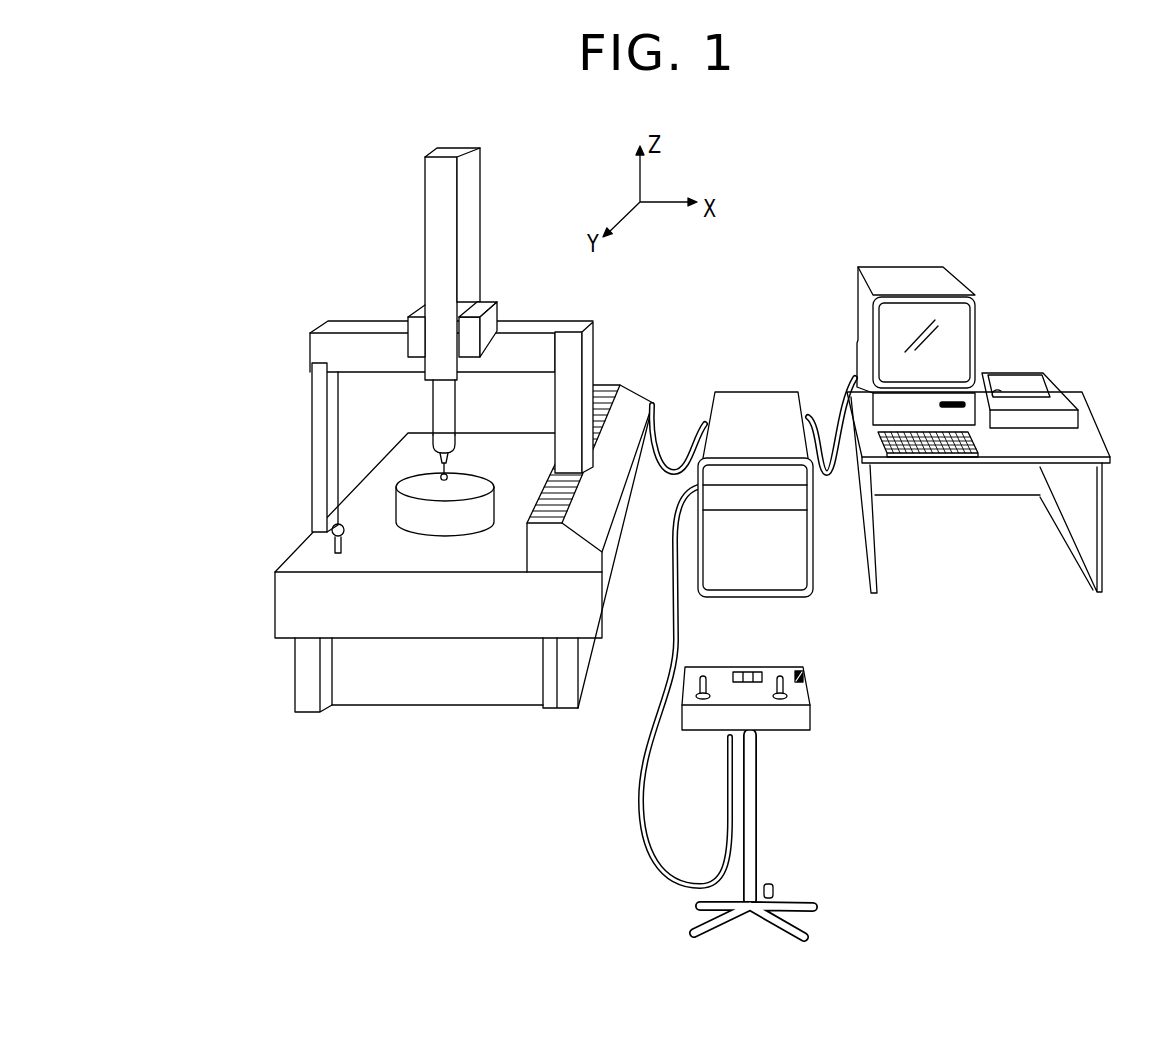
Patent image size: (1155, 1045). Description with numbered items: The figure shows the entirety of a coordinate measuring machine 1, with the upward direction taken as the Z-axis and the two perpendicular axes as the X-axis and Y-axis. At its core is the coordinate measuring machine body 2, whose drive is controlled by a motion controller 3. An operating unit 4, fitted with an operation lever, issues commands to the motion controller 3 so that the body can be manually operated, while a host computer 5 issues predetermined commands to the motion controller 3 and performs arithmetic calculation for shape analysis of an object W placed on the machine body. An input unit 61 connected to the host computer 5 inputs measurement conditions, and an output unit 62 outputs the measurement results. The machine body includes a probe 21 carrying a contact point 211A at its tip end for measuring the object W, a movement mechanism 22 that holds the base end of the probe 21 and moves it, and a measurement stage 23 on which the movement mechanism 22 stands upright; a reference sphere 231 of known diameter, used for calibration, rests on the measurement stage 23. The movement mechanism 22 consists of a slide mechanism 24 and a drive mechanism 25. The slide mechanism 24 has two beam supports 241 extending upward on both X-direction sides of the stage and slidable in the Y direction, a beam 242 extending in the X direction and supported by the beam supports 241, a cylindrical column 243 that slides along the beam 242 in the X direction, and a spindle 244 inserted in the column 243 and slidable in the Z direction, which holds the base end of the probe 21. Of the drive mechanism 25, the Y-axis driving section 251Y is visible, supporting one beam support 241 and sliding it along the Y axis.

The coordinate measuring machine 1 is at (657, 510).
The coordinate measuring machine body 2 is at (456, 398).
The probe 21 is at (478, 502).
The contact point 211A is at (447, 481).
The movement mechanism 22 is at (452, 340).
The measurement stage 23 is at (308, 554).
The reference sphere 231 is at (334, 525).
The slide mechanism 24 is at (452, 340).
The beam supports 241 is at (317, 402).
The beam 242 is at (535, 338).
The column 243 is at (472, 192).
The spindle 244 is at (455, 403).
The drive mechanism 25 is at (625, 462).
The Y-axis driving section 251Y is at (667, 378).
The motion controller 3 is at (763, 420).
The operating unit 4 is at (800, 695).
The host computer 5 is at (953, 395).
The input unit 61 is at (947, 454).
The output unit 62 is at (1062, 402).
The object W is at (410, 523).